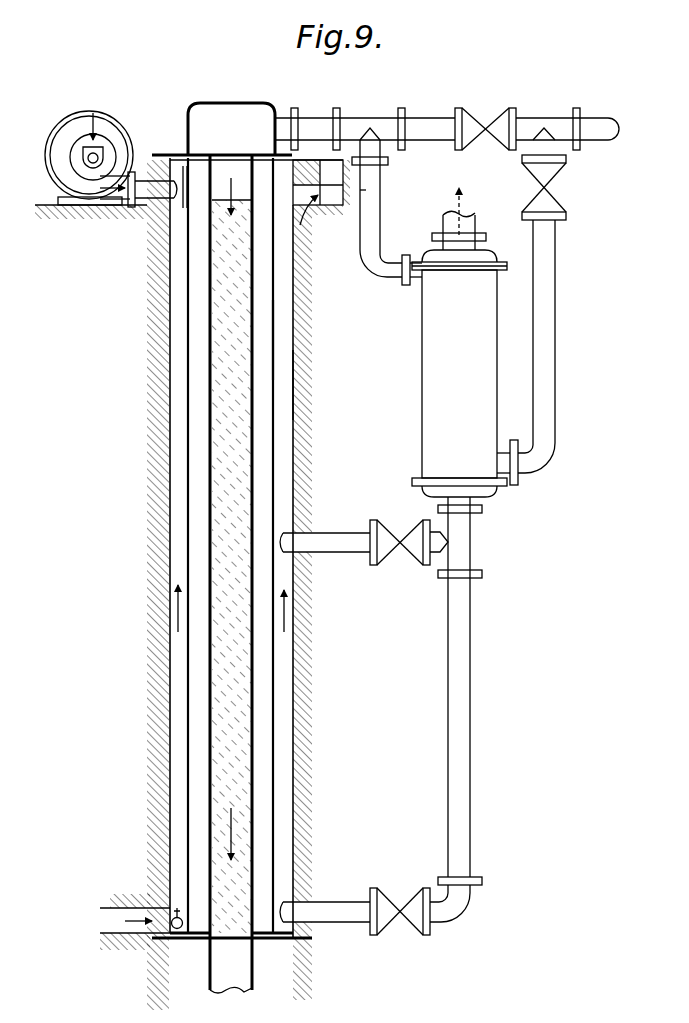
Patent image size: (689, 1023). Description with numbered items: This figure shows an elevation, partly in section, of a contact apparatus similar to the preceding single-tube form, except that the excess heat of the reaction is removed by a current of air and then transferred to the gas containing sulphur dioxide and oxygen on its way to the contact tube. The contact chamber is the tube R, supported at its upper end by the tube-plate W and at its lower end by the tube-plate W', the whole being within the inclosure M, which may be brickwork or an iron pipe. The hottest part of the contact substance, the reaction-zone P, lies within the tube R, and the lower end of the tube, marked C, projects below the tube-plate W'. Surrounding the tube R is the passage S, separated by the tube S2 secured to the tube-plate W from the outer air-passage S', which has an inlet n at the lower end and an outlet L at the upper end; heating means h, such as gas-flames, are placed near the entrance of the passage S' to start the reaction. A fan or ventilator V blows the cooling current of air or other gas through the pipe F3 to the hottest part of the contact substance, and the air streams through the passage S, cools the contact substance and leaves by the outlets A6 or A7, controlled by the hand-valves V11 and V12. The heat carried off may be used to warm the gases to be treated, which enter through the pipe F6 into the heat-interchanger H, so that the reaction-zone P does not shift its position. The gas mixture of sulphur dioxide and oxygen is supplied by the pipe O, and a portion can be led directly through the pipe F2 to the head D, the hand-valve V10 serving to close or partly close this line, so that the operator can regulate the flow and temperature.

The gas receiving head D is at (231, 129).
The tube-plate W is at (247, 170).
The pipe F2 is at (365, 129).
The hand-valve V10 is at (485, 119).
The gas supply pipe O is at (650, 129).
The air-passage outlet L is at (318, 192).
The fan or ventilator V is at (90, 159).
The pipe F3 is at (170, 195).
The hottest part of contact substance P is at (231, 544).
The contact chamber R is at (232, 650).
The passage S is at (231, 545).
The tube S2 is at (278, 340).
The air-passage S' is at (320, 385).
The inclosure M is at (225, 585).
The heat-interchanger H is at (459, 342).
The pipe F6 is at (531, 306).
The outlet A7 is at (345, 528).
The hand-valve V12 is at (400, 534).
The outlet A6 is at (350, 896).
The hand-valve V11 is at (400, 903).
The heating means h is at (177, 906).
The air inlet n is at (131, 920).
The bottom pipe C is at (231, 963).
The tube-plate W' is at (232, 950).